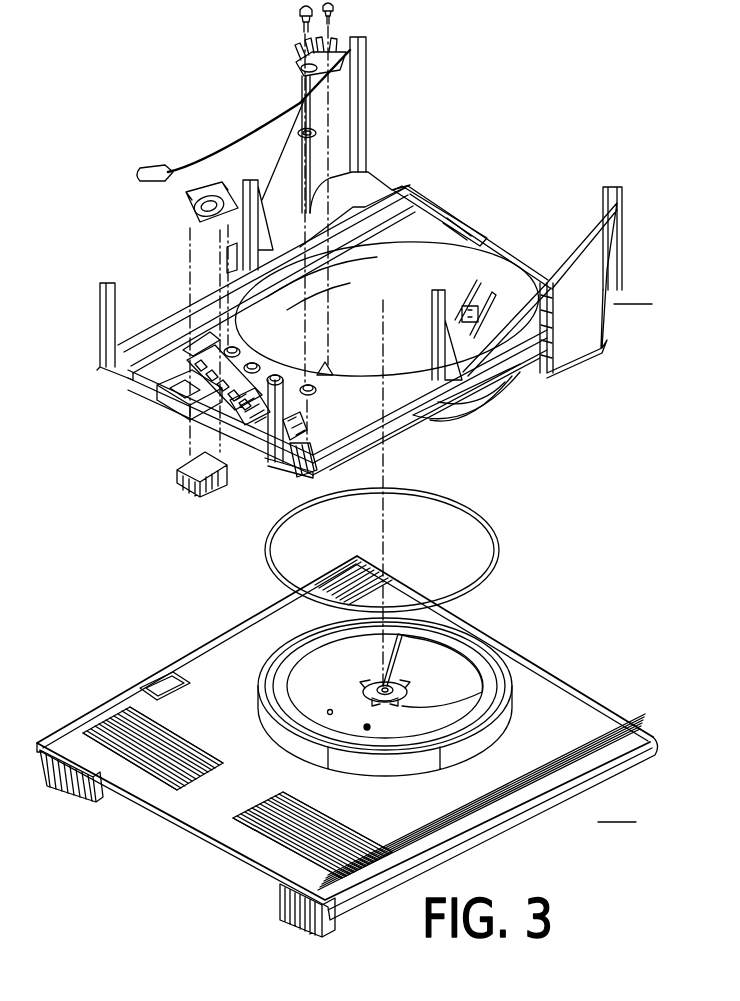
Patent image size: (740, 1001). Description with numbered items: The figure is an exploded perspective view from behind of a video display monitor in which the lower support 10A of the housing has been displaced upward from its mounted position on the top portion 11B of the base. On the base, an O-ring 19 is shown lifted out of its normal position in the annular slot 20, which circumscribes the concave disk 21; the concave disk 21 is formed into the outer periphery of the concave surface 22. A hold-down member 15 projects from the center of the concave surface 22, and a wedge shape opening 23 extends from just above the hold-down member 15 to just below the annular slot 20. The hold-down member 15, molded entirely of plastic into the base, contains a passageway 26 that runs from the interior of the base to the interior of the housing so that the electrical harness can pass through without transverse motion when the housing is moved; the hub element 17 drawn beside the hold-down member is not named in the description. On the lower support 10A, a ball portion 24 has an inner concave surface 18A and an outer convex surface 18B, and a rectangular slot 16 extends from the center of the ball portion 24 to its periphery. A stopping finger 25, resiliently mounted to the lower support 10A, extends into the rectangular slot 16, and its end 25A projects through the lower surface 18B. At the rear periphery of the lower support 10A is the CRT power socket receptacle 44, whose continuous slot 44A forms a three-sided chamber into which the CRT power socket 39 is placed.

The lower support 10A is at (377, 344).
The top portion 11B is at (347, 746).
The hold-down member 15 is at (375, 700).
The rectangular slot 16 is at (450, 318).
The drive hub 17 is at (371, 684).
The inner concave surface 18A is at (437, 257).
The outer convex surface 18B is at (430, 416).
The O-ring 19 is at (492, 528).
The annular slot 20 is at (307, 663).
The concave disk 21 is at (314, 644).
The concave surface 22 is at (297, 692).
The wedge shape opening 23 is at (466, 668).
The ball portion 24 is at (498, 419).
The stopping finger 25 is at (479, 292).
The end of stopping finger 25A is at (482, 324).
The passageway 26 is at (388, 686).
The CRT power socket 39 is at (194, 190).
The CRT power socket receptacle 44 is at (177, 390).
The continuous slot 44A is at (175, 394).